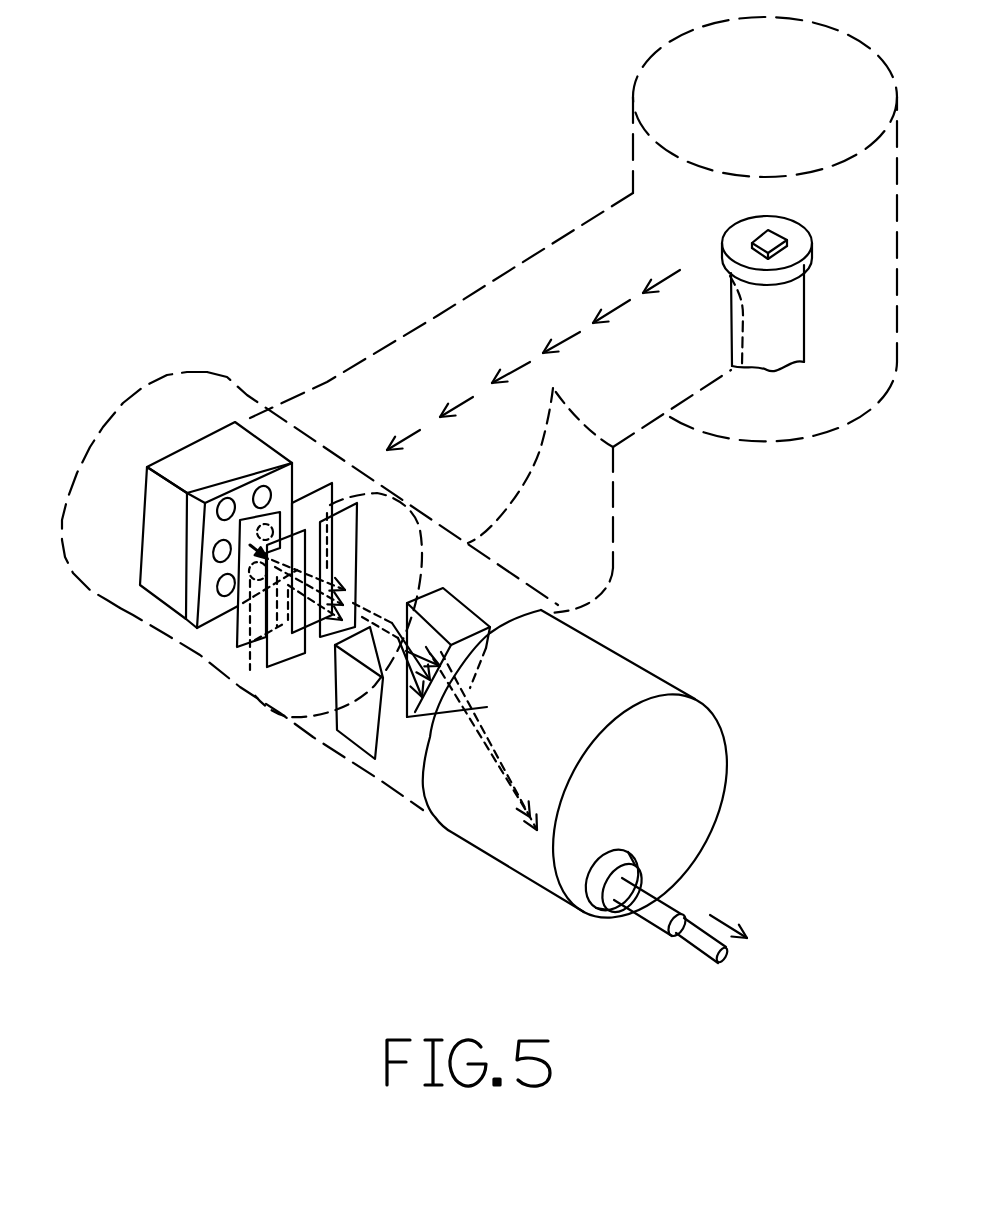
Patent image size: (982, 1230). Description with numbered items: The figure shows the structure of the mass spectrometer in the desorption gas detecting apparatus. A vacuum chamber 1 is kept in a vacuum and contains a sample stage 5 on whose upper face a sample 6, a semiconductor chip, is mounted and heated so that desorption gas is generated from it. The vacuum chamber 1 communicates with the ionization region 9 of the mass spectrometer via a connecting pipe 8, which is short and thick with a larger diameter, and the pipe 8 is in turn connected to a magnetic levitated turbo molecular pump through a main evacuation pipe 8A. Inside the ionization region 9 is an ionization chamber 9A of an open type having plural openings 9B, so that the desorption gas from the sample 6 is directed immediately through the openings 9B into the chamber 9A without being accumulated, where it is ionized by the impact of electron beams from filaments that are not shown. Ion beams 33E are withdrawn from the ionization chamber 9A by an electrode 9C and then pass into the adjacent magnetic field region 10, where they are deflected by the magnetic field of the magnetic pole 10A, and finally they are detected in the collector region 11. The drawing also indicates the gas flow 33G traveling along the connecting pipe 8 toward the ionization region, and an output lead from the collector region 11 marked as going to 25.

The vacuum chamber 1 is at (830, 70).
The sample stage 5 is at (813, 257).
The sample 6 is at (782, 240).
The connecting pipe 8 is at (515, 280).
The main evacuation pipe 8A is at (578, 505).
The ionization region 9 is at (142, 387).
The ionization chamber 9A is at (163, 573).
The openings 9B is at (190, 620).
The electrode 9C is at (240, 665).
The magnetic field region 10 is at (503, 568).
The magnetic pole 10A is at (443, 648).
The collector region 11 is at (455, 830).
The ion beams 33E is at (493, 753).
The guided light beam 33G is at (470, 398).
The signal output to 25 is at (780, 941).